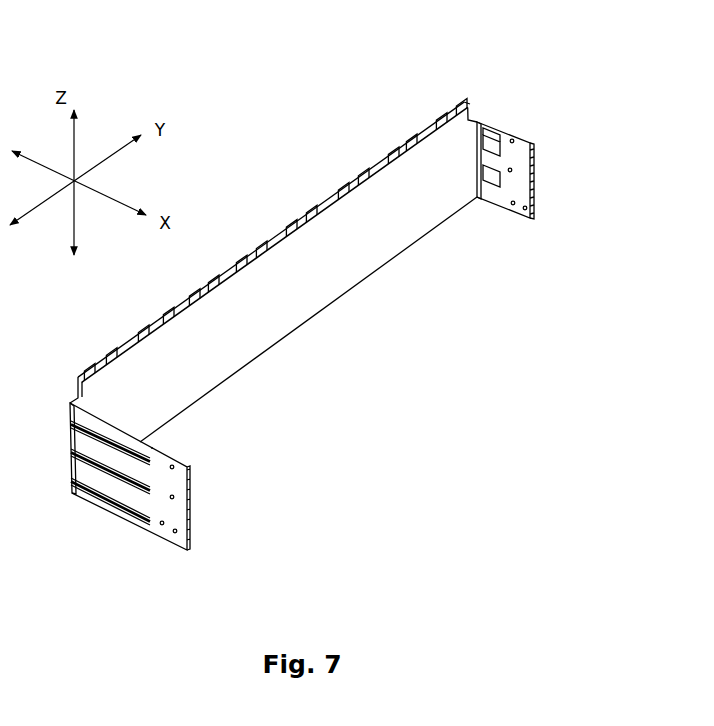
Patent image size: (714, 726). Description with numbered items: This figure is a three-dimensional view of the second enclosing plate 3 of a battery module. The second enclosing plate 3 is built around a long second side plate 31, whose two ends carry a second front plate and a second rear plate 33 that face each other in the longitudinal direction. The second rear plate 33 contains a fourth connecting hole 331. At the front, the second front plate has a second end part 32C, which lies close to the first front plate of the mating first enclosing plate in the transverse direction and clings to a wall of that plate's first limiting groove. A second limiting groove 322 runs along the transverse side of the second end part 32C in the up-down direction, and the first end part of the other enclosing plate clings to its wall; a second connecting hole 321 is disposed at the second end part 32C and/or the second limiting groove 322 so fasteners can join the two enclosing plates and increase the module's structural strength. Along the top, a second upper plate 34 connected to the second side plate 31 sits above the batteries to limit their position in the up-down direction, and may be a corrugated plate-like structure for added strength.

The second enclosing plate 3 is at (153, 272).
The second side plate 31 is at (322, 310).
The second end part 32C is at (531, 140).
The second connecting hole 321 is at (535, 152).
The second limiting groove 322 is at (509, 136).
The second rear plate 33 is at (115, 525).
The fourth connecting hole 331 is at (170, 457).
The second upper plate 34 is at (277, 240).